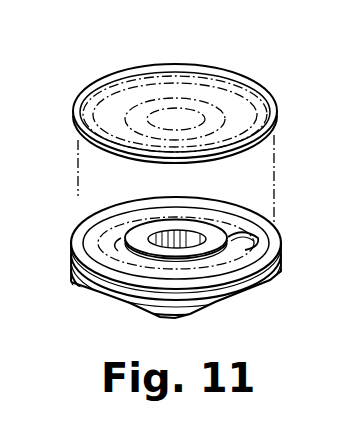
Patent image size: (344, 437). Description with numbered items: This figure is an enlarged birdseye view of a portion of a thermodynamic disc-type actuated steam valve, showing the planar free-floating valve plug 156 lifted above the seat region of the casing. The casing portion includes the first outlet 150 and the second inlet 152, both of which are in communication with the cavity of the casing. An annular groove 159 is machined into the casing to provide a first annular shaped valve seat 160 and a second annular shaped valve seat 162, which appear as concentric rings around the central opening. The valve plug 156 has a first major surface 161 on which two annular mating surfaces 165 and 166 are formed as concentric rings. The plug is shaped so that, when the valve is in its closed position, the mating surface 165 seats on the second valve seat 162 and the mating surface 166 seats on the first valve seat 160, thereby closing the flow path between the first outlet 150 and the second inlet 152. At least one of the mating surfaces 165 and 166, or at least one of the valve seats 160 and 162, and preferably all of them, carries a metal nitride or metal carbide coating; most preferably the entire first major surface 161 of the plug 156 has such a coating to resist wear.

The first outlet 150 is at (182, 251).
The second inlet 152 is at (248, 248).
The free-floating valve plug 156 is at (157, 86).
The annular groove 159 is at (105, 248).
The first annular shaped valve seat 160 is at (157, 225).
The first major surface 161 is at (98, 116).
The second annular shaped valve seat 162 is at (252, 212).
The annular mating surface 165 is at (262, 109).
The annular mating surface 166 is at (183, 100).